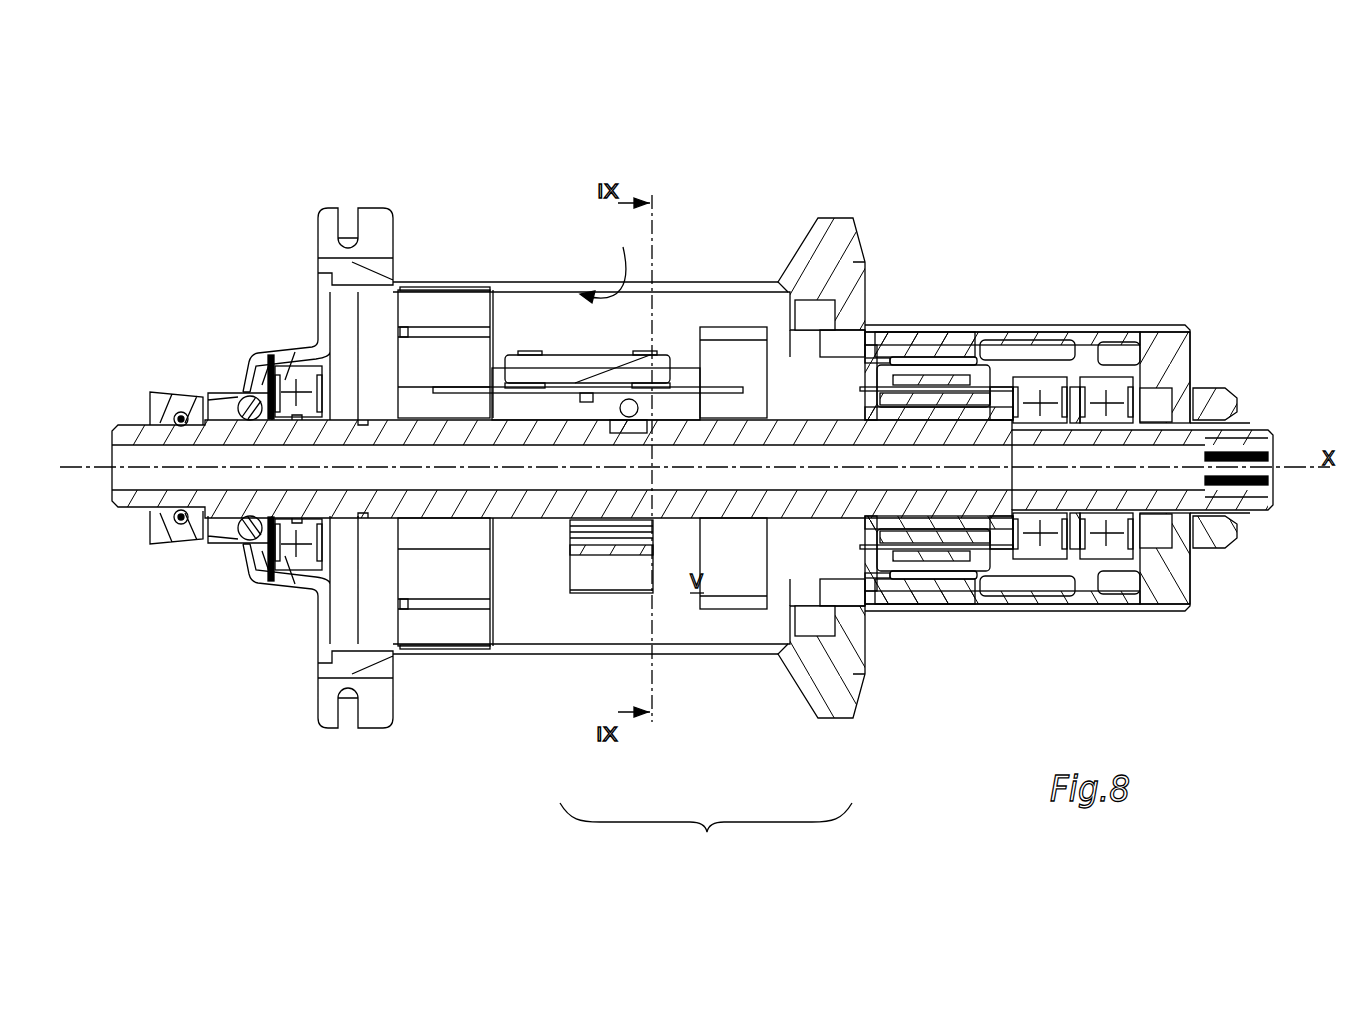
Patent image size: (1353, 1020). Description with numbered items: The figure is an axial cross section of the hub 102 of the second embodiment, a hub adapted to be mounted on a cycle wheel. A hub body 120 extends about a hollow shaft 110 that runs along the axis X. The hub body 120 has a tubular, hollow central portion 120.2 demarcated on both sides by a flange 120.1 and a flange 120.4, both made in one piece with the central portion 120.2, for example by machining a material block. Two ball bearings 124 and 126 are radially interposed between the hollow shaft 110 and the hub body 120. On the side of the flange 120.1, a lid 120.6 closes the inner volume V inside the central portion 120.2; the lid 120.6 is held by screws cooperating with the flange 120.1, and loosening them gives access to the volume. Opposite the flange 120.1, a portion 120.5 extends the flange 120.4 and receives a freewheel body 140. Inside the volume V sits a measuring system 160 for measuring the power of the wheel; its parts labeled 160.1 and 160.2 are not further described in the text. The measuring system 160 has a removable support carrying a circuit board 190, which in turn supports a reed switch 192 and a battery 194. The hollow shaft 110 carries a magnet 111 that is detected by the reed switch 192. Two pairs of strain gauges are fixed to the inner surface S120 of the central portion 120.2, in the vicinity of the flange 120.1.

The hub 102 is at (408, 160).
The hollow shaft 110 is at (442, 518).
The magnet 111 is at (618, 440).
The hub body 120 is at (706, 834).
The flange 120.1 is at (377, 710).
The central portion 120.2 is at (690, 650).
The flange 120.4 is at (818, 663).
The portion for receiving a freewheel body 120.5 is at (863, 535).
The lid 120.6 is at (322, 320).
The ball bearing 124 is at (296, 390).
The ball bearing 126 is at (1038, 392).
The freewheel body 140 is at (913, 342).
The measuring system 160 is at (532, 308).
The lower magnet ring 160.1 is at (460, 650).
The upper magnet ring 160.2 is at (474, 288).
The circuit board 190 is at (452, 388).
The reed switch 192 is at (634, 400).
The battery 194 is at (565, 372).
The inner surface of the central portion S120 is at (614, 261).